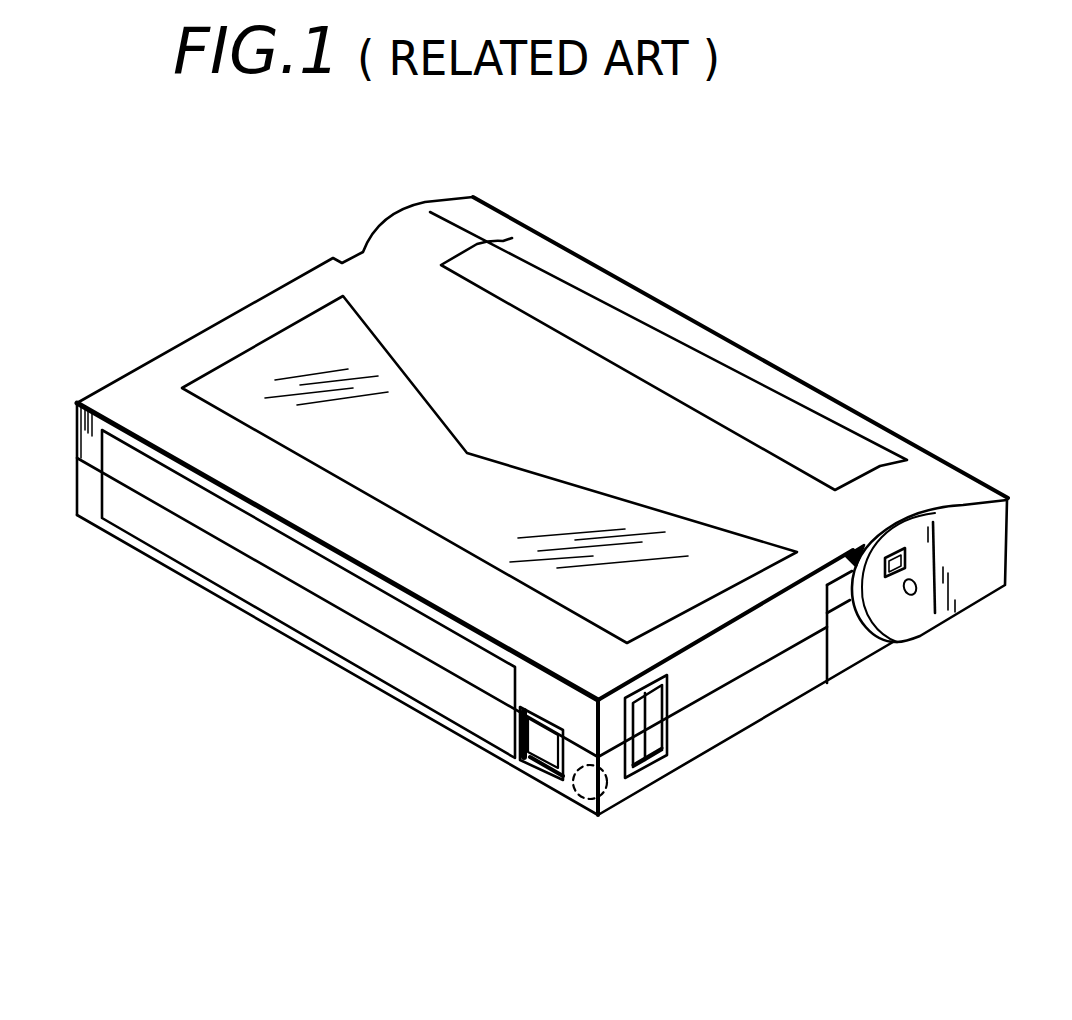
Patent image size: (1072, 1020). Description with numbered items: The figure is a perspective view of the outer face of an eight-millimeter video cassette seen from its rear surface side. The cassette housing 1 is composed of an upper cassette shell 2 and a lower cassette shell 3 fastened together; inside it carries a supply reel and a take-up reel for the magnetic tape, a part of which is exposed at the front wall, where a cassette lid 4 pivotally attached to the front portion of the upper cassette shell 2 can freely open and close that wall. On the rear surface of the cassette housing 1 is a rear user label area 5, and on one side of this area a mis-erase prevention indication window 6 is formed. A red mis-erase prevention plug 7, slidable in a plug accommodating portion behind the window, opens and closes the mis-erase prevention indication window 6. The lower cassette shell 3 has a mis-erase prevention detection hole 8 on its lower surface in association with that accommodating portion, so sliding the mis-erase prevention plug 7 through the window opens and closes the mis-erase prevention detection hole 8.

The cassette housing 1 is at (875, 819).
The upper cassette shell 2 is at (754, 643).
The lower cassette shell 3 is at (806, 676).
The cassette lid 4 is at (985, 554).
The rear user label area 5 is at (240, 596).
The mis-erase prevention indication window 6 is at (546, 780).
The mis-erase prevention plug 7 is at (524, 735).
The mis-erase prevention detection hole 8 is at (600, 793).